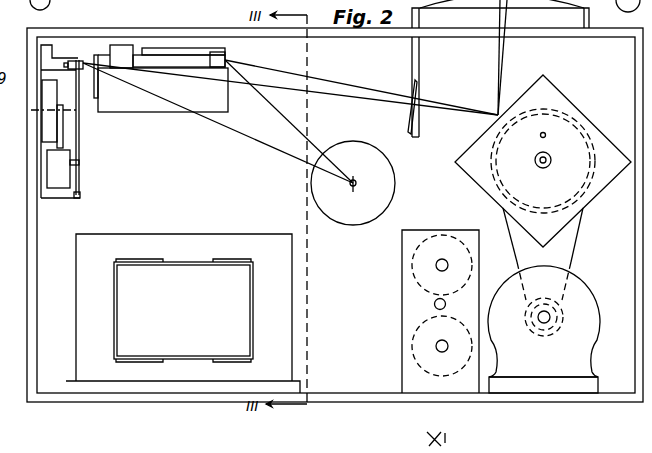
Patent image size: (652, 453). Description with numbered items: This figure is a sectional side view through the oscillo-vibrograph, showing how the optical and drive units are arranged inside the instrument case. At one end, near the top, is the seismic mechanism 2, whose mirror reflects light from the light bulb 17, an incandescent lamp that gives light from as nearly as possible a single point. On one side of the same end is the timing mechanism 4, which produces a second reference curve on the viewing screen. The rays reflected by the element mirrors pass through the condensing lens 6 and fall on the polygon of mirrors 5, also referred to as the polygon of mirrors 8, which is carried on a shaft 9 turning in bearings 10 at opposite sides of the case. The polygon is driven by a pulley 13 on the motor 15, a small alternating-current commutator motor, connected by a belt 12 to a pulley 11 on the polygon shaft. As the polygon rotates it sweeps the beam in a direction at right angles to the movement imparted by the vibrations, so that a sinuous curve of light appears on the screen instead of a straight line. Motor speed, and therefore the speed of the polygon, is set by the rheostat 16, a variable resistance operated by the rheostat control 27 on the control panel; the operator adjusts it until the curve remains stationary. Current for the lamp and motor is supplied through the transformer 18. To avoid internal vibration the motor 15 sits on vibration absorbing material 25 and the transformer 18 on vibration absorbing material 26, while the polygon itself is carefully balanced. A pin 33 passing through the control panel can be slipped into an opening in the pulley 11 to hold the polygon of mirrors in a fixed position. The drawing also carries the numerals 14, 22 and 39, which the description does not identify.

The seismic mechanism 2 is at (41, 197).
The timing mechanism 4 is at (153, 106).
The polygon of mirrors 5 is at (560, 76).
The condensing lens 6 is at (413, 114).
The polygon of mirrors 8 is at (476, 165).
The shaft 9 is at (546, 165).
The bearings 10 is at (550, 153).
The pulley 11 is at (553, 141).
The belt 12 is at (583, 226).
The pulley 13 is at (552, 303).
The shaft 14 is at (541, 323).
The motor 15 is at (577, 283).
The rheostat 16 is at (445, 230).
The light bulb 17 is at (339, 213).
The transformer 18 is at (214, 246).
The cords 22 is at (352, 91).
The vibration absorbing material 25 is at (588, 389).
The vibration absorbing material 26 is at (72, 384).
The rheostat control 27 is at (434, 304).
The pin 33 is at (541, 136).
The cover 39 is at (589, 17).